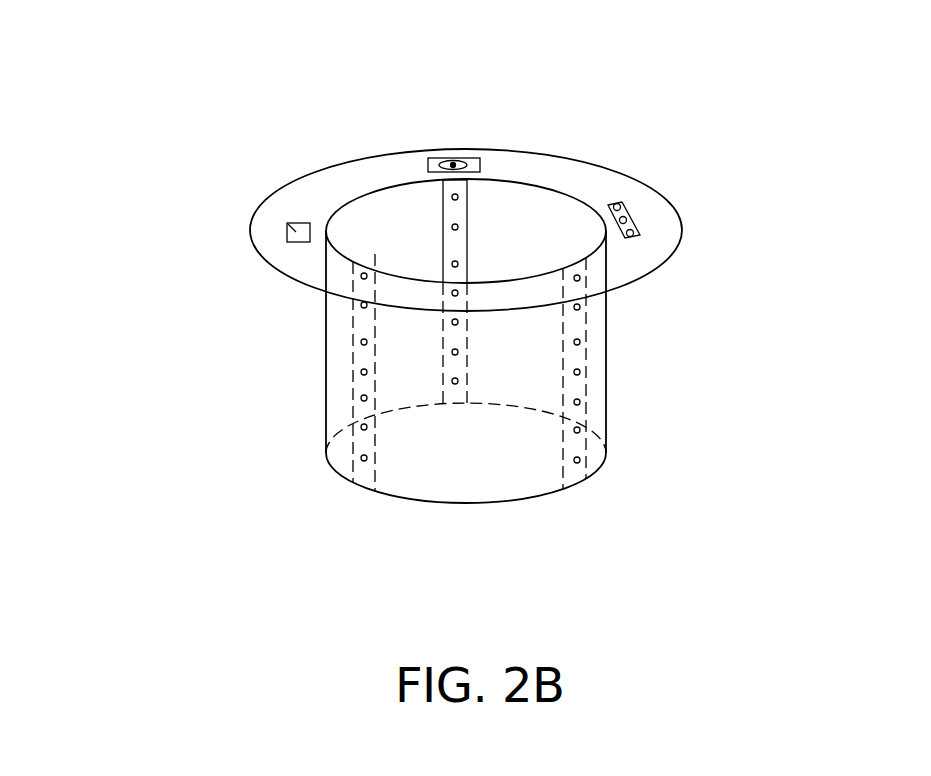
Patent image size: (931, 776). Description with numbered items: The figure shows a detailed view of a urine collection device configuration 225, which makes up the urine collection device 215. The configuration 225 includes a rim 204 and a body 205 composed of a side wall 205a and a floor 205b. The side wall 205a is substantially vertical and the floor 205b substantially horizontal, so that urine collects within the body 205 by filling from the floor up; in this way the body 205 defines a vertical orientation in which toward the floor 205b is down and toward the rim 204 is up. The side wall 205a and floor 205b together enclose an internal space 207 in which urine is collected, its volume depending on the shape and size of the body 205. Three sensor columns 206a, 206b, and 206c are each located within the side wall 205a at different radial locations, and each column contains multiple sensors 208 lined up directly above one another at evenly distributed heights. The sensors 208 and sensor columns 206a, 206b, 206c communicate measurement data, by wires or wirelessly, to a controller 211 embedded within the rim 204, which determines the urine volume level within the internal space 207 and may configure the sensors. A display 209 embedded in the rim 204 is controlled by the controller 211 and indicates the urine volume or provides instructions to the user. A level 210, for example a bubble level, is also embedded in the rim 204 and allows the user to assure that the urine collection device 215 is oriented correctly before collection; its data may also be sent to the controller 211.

The rim 204 is at (340, 183).
The body 205 is at (597, 372).
The side wall 205a is at (326, 345).
The floor 205b is at (453, 505).
The sensor column 206a is at (462, 212).
The sensor column 206b is at (578, 412).
The sensor column 206c is at (360, 388).
The internal space 207 is at (502, 477).
The sensors 208 is at (453, 227).
The display 209 is at (630, 213).
The level 210 is at (430, 158).
The controller 211 is at (287, 226).
The urine collection device 215 is at (681, 238).
The urine collection device configuration 225 is at (653, 143).